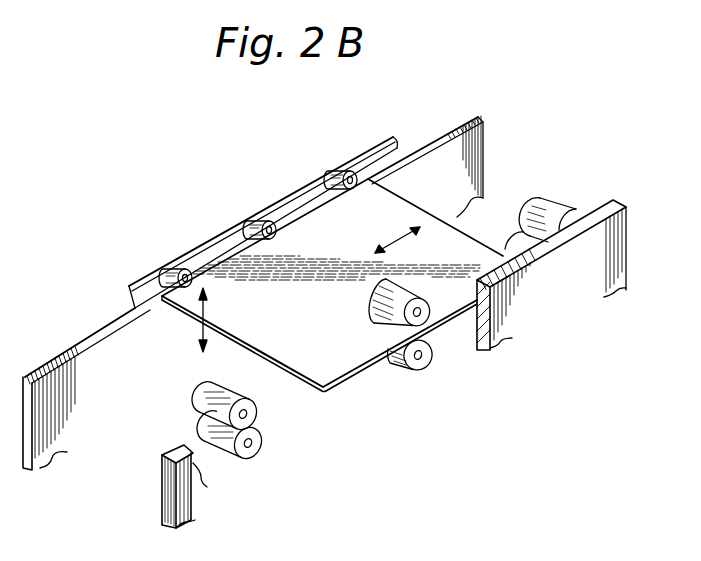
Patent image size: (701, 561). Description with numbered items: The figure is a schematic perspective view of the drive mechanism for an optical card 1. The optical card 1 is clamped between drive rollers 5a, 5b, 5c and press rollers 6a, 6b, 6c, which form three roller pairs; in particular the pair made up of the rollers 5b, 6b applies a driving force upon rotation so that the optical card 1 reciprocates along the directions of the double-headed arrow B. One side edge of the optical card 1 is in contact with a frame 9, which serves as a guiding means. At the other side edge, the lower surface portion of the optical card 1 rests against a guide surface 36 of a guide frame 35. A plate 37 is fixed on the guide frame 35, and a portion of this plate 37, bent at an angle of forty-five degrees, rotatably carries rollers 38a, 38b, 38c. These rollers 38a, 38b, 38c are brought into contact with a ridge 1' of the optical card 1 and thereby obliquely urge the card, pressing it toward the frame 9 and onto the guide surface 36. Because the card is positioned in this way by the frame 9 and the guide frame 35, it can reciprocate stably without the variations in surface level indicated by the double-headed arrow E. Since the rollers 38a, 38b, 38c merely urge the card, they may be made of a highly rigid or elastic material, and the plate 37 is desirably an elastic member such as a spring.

The optical card 1 is at (332, 279).
The ridge 1' is at (263, 222).
The plate 37 is at (395, 156).
The roller 38a is at (172, 268).
The roller 38b is at (249, 221).
The roller 38c is at (337, 170).
The guide surface 36 is at (468, 120).
The guide frame 35 is at (471, 151).
The frame 9 is at (627, 220).
The drive roller 5a is at (258, 448).
The press roller 6a is at (256, 412).
The drive roller 5b is at (393, 366).
The press roller 6b is at (376, 288).
The drive roller 5c is at (514, 246).
The press roller 6c is at (552, 206).
The double-headed arrow B is at (397, 240).
The double-headed arrow E is at (209, 307).